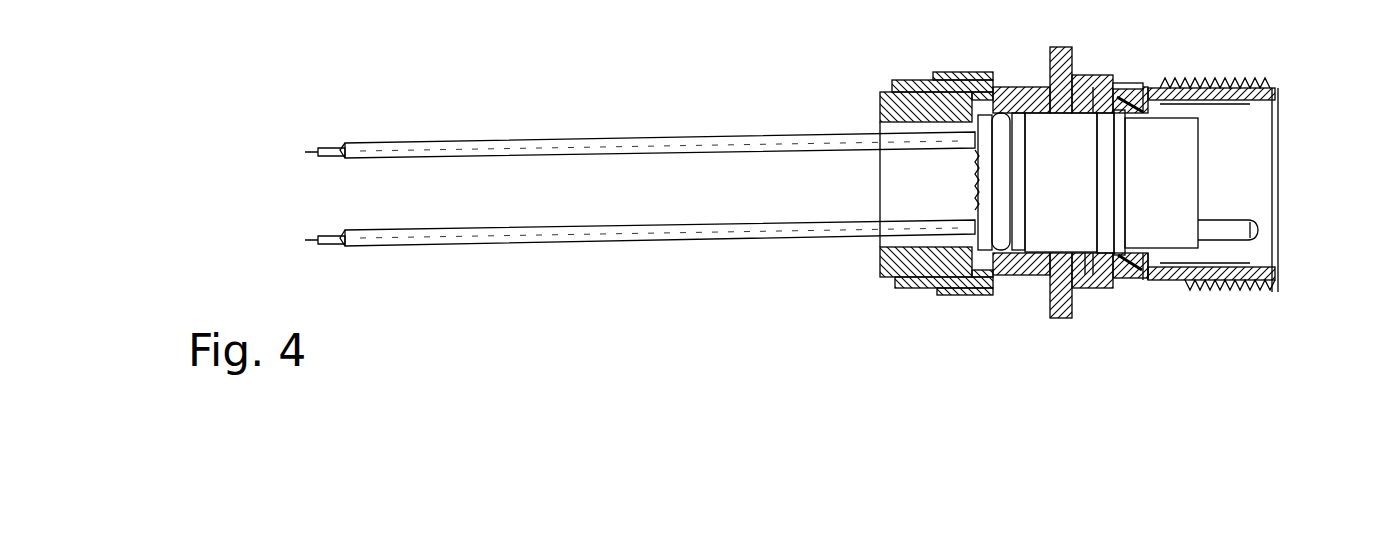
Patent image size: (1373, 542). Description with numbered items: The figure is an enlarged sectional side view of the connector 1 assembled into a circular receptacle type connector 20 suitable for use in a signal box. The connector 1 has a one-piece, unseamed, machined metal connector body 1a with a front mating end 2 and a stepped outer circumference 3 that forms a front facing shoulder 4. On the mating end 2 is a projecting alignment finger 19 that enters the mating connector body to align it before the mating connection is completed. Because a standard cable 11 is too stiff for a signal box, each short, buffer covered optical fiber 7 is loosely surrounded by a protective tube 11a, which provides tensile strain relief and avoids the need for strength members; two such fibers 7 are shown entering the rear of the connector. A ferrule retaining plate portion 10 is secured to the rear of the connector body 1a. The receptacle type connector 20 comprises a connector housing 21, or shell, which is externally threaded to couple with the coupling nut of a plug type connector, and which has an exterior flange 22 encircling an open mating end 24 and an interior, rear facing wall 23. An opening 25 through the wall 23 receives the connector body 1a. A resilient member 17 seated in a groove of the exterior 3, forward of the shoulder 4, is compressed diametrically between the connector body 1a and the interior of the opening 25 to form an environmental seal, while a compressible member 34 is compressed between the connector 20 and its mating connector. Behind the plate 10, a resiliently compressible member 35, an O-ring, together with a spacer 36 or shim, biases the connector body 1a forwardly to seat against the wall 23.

The connector 1 is at (822, 83).
The connector body 1a is at (1160, 162).
The front mating end 2 is at (1200, 148).
The outer circumference 3 is at (1150, 88).
The front facing shoulder 4 is at (1108, 88).
The optical fibers 7 is at (330, 148).
The ferrule retaining plate portion 10 is at (1022, 232).
The cable 11 is at (800, 138).
The protective tube 11a is at (478, 146).
The resilient member 17 is at (1152, 253).
The projecting alignment finger 19 is at (1250, 234).
The connector 20 is at (1093, 73).
The connector housing 21 is at (1232, 80).
The exterior flange 22 is at (1252, 92).
The wall 23 is at (1090, 253).
The open mating end 24 is at (1250, 186).
The opening 25 is at (1087, 138).
The compressible member 34 is at (1135, 92).
The resiliently compressible member 35 is at (997, 237).
The spacer 36 is at (983, 220).